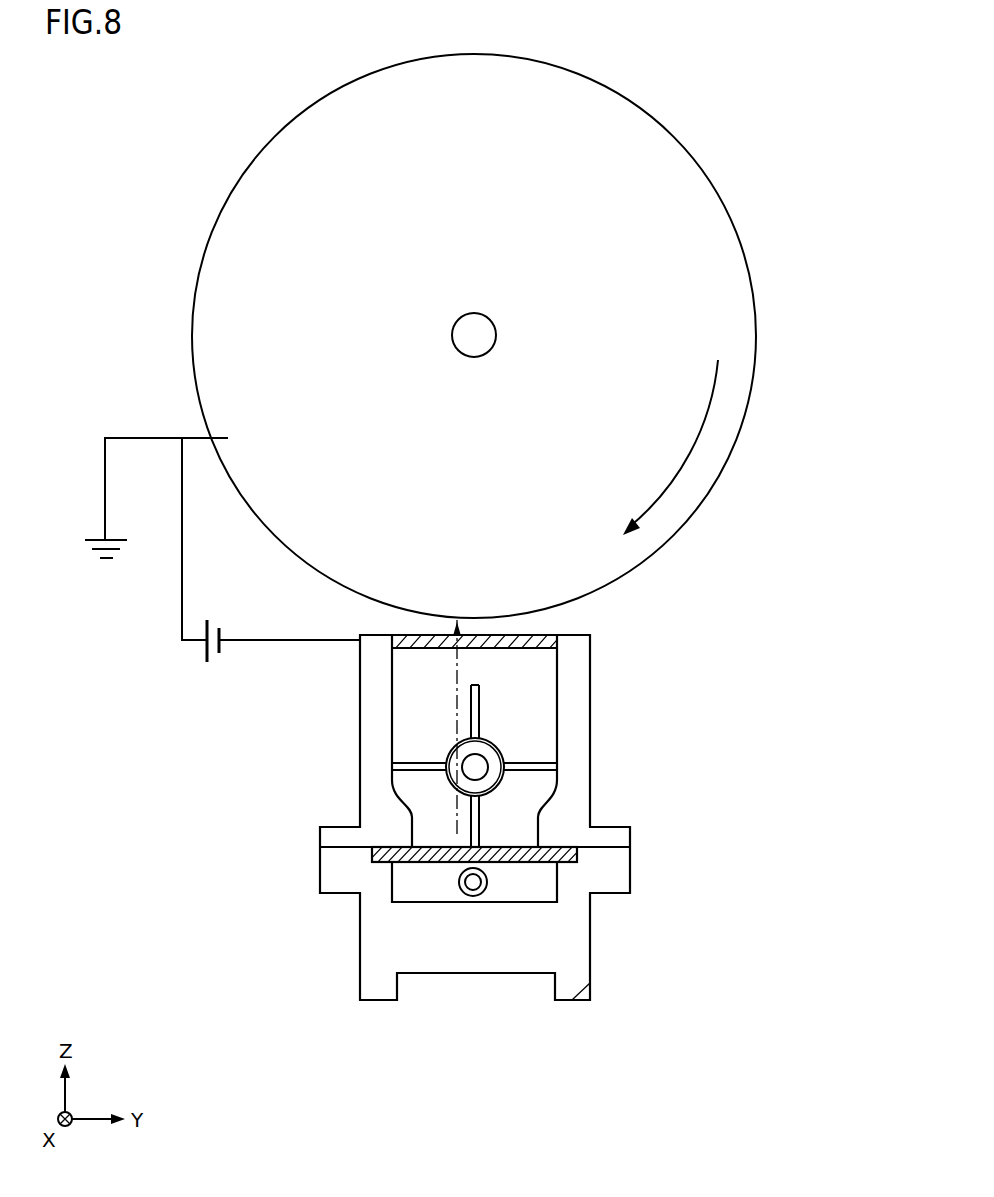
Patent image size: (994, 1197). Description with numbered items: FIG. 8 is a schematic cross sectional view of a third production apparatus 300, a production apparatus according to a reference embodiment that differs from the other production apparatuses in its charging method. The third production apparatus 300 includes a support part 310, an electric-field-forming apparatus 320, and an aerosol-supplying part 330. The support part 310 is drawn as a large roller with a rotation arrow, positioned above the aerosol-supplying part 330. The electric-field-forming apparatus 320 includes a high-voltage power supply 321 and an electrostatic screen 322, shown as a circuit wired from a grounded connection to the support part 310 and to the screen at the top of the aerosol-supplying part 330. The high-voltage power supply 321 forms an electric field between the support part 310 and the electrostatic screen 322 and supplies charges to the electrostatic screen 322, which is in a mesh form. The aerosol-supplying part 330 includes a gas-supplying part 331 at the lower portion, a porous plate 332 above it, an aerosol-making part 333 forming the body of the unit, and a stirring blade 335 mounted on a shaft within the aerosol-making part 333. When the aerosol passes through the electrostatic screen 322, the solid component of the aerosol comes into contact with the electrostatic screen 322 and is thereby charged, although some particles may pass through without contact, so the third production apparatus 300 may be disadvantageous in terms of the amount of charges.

The third production apparatus 300 is at (782, 96).
The support part 310 is at (742, 312).
The electric-field-forming apparatus 320 is at (272, 740).
The high-voltage power supply 321 is at (204, 648).
The electrostatic screen 322 is at (433, 641).
The aerosol-supplying part 330 is at (744, 685).
The gas-supplying part 331 is at (488, 880).
The porous plate 332 is at (530, 862).
The aerosol-making part 333 is at (591, 708).
The stirring blade 335 is at (505, 770).